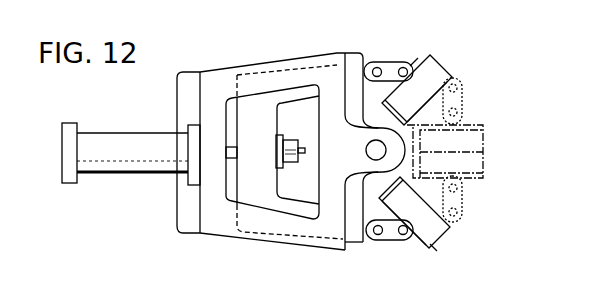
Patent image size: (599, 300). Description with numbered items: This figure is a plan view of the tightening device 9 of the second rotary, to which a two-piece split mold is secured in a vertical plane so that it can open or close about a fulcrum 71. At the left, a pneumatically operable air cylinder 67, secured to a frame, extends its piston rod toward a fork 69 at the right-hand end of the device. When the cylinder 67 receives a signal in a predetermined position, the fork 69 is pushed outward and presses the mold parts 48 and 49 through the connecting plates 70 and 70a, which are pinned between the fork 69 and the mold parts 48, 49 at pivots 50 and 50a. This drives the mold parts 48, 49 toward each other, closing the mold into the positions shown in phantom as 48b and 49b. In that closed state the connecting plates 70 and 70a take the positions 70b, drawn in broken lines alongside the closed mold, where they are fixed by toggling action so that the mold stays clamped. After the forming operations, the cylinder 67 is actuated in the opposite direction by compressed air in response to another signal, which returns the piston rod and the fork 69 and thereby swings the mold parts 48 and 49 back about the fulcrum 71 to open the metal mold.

The tightening device 9 is at (265, 38).
The air cylinder 67 is at (118, 160).
The fork 69 is at (356, 230).
The connecting plate 70 is at (391, 241).
The connecting plate 70a is at (389, 62).
The connecting plate positions 70b is at (462, 91).
The fulcrum 71 is at (367, 154).
The mold part 48 is at (444, 61).
The mold part 49 is at (451, 230).
The closed position of mold part 48b is at (487, 137).
The closed position of mold part 49b is at (478, 160).
The pivot 50 is at (437, 248).
The pivot 50a is at (417, 63).